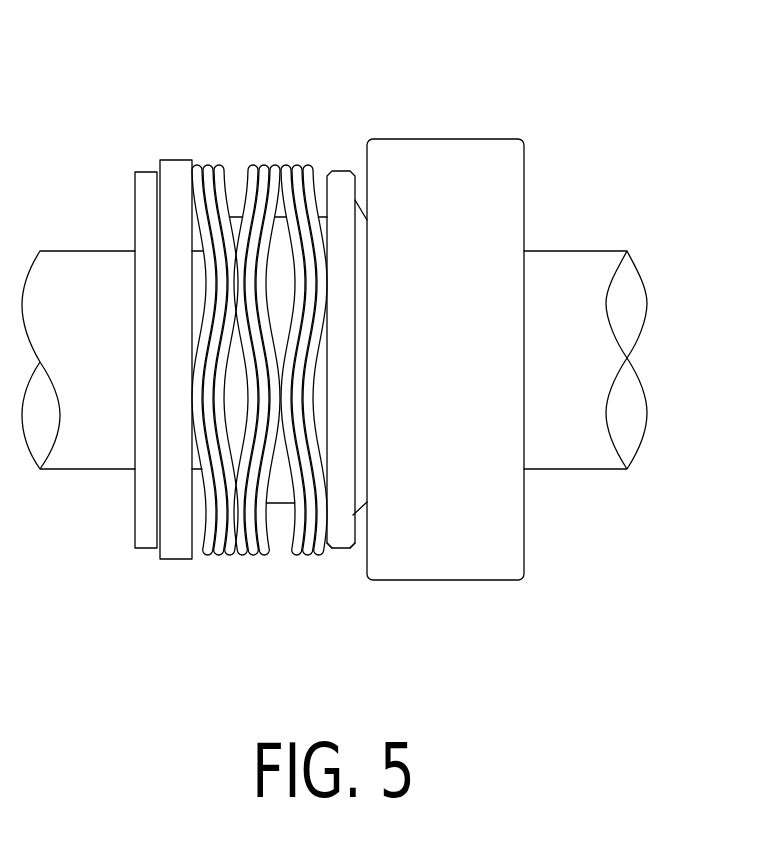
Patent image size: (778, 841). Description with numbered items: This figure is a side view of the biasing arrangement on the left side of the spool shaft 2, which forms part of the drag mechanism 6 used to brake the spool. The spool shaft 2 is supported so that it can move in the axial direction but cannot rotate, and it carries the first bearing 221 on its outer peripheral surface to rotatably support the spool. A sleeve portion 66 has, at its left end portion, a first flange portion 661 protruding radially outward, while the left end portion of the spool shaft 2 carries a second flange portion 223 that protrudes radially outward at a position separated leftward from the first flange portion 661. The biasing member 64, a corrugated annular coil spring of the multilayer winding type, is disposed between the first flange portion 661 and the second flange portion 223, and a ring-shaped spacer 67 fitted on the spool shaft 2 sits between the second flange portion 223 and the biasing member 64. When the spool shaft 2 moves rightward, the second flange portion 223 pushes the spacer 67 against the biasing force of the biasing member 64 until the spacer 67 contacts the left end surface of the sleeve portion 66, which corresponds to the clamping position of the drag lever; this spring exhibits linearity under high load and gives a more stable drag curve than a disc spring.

The spool shaft 2 is at (577, 251).
The drag mechanism 6 is at (552, 120).
The first bearing 221 is at (462, 138).
The second flange portion 223 is at (150, 171).
The biasing member 64 is at (277, 164).
The sleeve portion 66 is at (360, 273).
The first flange portion 661 is at (341, 550).
The spacer 67 is at (177, 159).